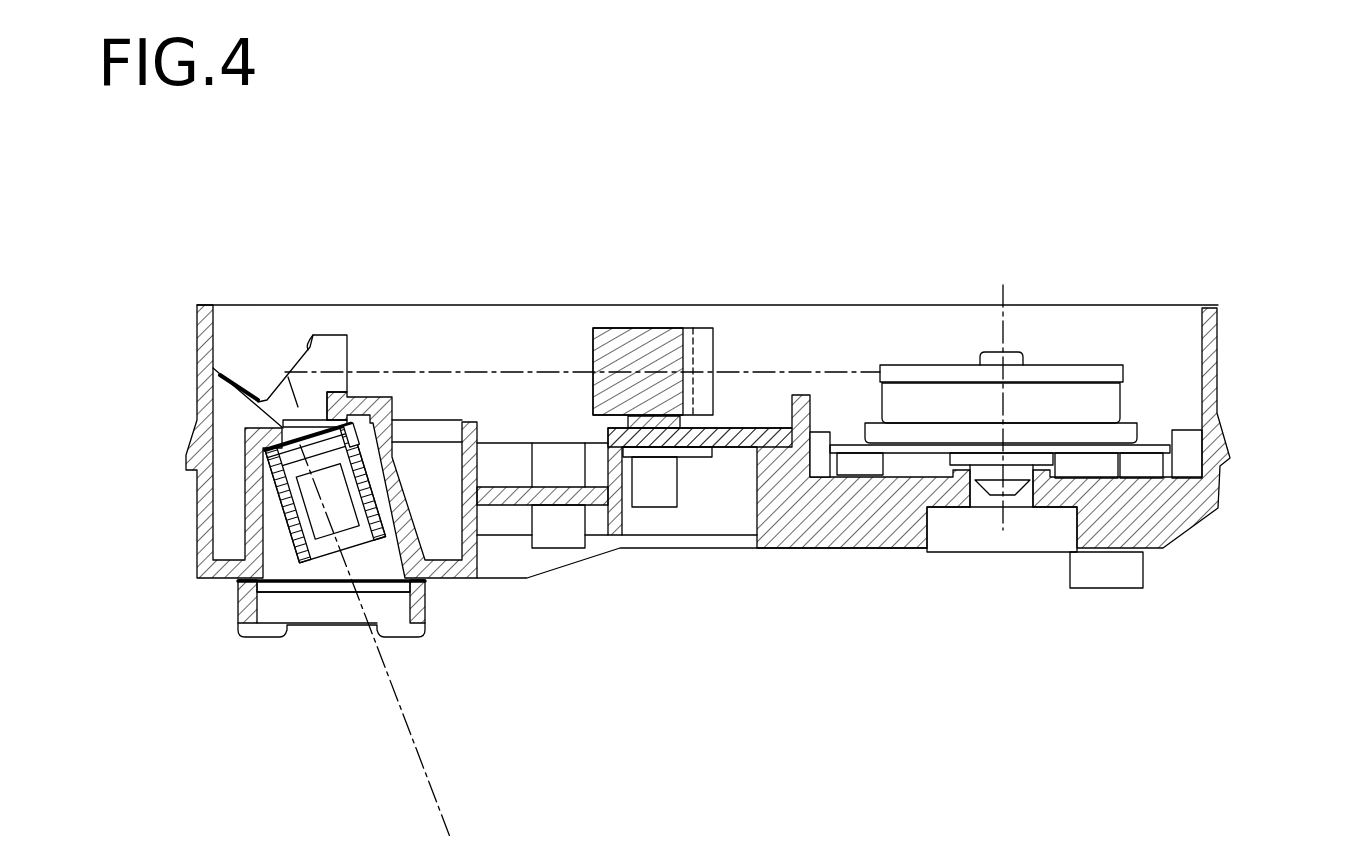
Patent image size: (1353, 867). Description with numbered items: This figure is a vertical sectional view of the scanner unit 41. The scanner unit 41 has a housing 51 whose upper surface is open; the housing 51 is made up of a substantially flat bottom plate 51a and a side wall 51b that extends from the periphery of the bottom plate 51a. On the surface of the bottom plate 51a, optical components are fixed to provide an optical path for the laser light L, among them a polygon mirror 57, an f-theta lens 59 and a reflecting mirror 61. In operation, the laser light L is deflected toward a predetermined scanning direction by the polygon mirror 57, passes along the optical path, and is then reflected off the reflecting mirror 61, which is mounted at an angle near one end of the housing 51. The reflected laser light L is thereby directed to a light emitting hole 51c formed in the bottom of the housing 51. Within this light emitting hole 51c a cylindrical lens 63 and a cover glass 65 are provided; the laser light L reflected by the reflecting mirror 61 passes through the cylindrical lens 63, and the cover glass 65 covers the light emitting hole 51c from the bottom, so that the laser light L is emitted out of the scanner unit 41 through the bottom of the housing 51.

The scanner unit 41 is at (1033, 212).
The housing 51 is at (761, 403).
The bottom plate 51a is at (745, 427).
The side wall 51b is at (1216, 345).
The light emitting hole 51c is at (276, 537).
The polygon mirror 57 is at (1073, 371).
The f-theta lens 59 is at (633, 328).
The reflecting mirror 61 is at (310, 347).
The cylindrical lens 63 is at (292, 540).
The cover glass 65 is at (337, 592).
The laser light L is at (438, 712).